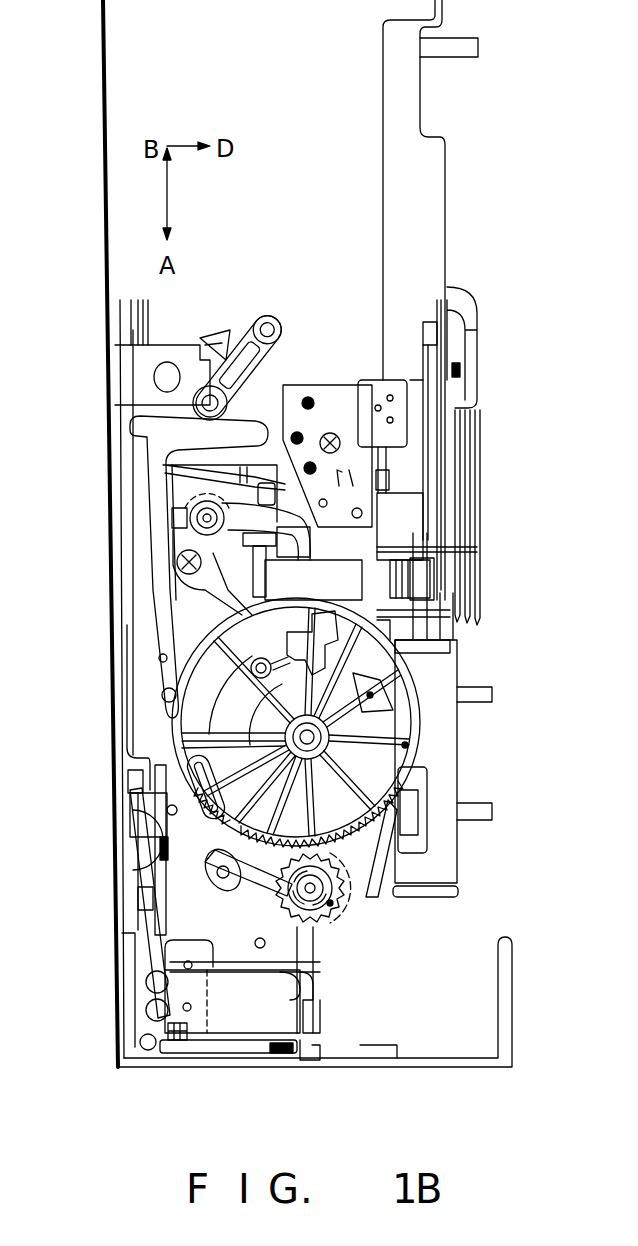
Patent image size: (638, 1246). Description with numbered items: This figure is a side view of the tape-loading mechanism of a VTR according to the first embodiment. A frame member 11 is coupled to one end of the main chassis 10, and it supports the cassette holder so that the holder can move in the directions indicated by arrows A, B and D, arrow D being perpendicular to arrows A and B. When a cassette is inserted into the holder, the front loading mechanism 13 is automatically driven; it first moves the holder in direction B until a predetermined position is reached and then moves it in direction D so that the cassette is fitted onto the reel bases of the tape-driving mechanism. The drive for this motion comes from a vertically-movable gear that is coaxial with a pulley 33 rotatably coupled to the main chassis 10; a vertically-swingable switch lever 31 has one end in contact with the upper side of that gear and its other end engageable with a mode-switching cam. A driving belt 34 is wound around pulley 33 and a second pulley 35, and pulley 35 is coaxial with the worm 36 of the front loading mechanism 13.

The main chassis 10 is at (400, 222).
The frame member 11 is at (132, 705).
The front loading mechanism 13 is at (435, 745).
The switch lever 31 is at (471, 352).
The pulley 33 is at (477, 432).
The driving belt 34 is at (477, 492).
The pulley 35 is at (477, 552).
The worm 36 is at (342, 583).